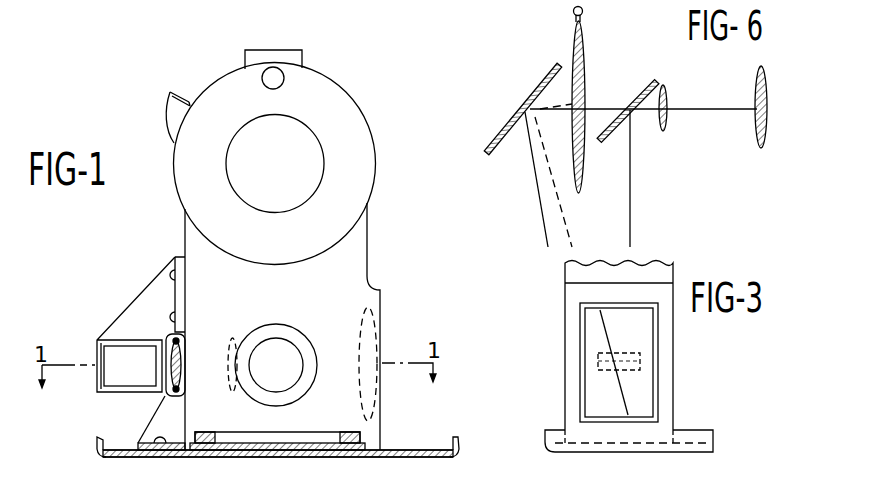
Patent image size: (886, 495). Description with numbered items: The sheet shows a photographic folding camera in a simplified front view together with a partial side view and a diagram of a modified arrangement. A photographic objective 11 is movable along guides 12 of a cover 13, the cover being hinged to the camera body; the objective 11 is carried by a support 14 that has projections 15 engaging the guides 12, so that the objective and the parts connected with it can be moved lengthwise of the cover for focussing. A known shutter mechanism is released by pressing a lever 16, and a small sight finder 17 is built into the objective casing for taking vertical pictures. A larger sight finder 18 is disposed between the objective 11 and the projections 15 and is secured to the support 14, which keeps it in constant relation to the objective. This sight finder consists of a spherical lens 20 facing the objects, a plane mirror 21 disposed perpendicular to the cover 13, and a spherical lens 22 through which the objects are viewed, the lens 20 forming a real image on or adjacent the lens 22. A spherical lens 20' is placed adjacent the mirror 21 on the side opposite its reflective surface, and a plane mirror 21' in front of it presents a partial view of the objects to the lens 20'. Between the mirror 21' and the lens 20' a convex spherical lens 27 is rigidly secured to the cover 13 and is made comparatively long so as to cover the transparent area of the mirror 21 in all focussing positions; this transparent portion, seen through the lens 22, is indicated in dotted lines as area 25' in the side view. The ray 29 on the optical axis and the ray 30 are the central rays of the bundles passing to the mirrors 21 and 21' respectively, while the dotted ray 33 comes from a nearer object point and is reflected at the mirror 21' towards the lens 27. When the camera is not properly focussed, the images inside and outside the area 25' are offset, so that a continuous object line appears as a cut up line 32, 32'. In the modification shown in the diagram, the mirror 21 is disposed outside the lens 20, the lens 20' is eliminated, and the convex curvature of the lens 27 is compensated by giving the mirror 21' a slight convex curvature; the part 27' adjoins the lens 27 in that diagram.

In FIG. 1, the photographic objective 11 is at (310, 146).
In FIG. 1, the guides 12 is at (345, 437).
In FIG. 1, the cover 13 is at (110, 457).
In FIG. 3, the cover 13 is at (713, 437).
In FIG. 1, the support 14 is at (358, 258).
In FIG. 1, the projections 15 is at (195, 452).
In FIG. 1, the lever 16 is at (180, 108).
In FIG. 1, the small sight finder 17 is at (300, 57).
In FIG. 1, the larger sight finder 18 is at (290, 355).
In FIG. 1, the spherical lens 20 is at (294, 372).
In FIG. 6, the spherical lens 20 is at (676, 116).
In FIG. 1, the spherical lens 20' is at (220, 373).
In FIG. 6, the plane mirror 21 is at (628, 102).
In FIG. 1, the plane mirror 21' is at (141, 343).
In FIG. 6, the plane mirror 21' is at (522, 106).
In FIG. 1, the spherical lens 22 is at (368, 332).
In FIG. 6, the spherical lens 22 is at (757, 136).
In FIG. 3, the spherical lens 22 is at (595, 397).
In FIG. 3, the dotted-line area 25' is at (651, 377).
In FIG. 1, the lens 27 is at (192, 350).
In FIG. 6, the lens 27 is at (590, 111).
In FIG. 6, the lens holder knob 27' is at (600, 14).
In FIG. 6, the ray 29 is at (737, 108).
In FIG. 6, the ray 30 is at (543, 226).
In FIG. 3, the cut up line 32 is at (593, 362).
In FIG. 3, the cut up line 32' is at (651, 355).
In FIG. 6, the ray 33 is at (565, 226).